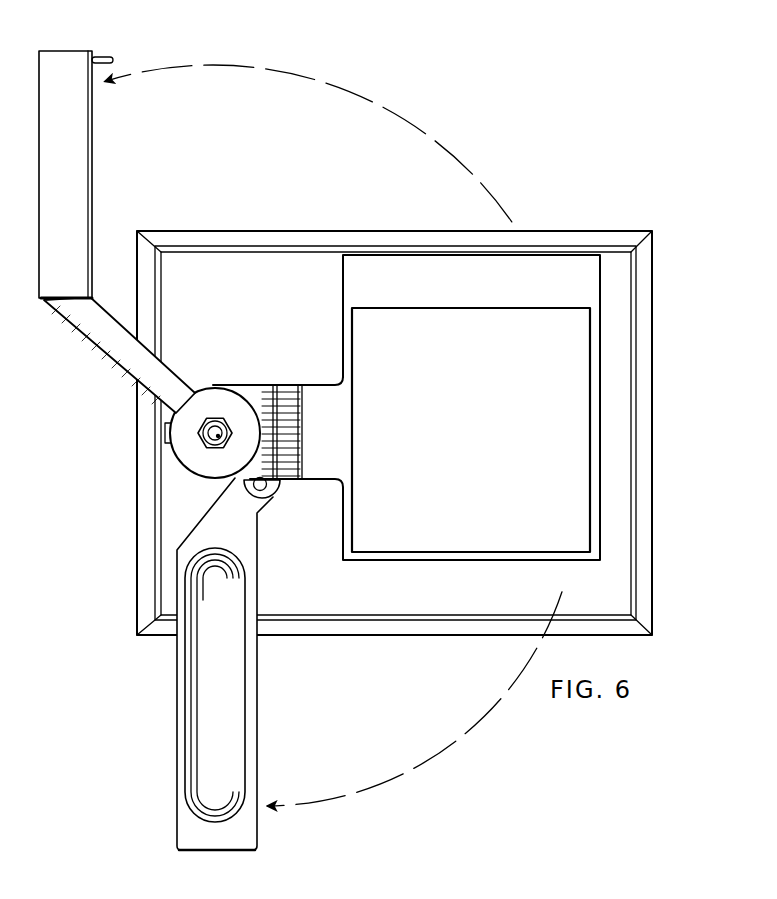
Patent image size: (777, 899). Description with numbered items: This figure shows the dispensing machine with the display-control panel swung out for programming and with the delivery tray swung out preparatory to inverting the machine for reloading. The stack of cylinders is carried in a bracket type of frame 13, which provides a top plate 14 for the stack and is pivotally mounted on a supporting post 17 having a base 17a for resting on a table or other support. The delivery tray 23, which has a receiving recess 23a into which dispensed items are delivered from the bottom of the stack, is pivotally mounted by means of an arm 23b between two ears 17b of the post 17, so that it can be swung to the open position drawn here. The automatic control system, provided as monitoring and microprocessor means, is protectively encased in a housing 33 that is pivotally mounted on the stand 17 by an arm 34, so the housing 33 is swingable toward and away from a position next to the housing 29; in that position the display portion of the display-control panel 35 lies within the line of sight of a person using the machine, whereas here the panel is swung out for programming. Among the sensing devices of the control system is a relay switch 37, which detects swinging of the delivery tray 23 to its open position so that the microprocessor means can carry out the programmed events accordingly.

The bracket frame 13 is at (300, 378).
The top plate 14 is at (573, 262).
The supporting post 17 is at (181, 448).
The base 17a is at (170, 495).
The ears 17b is at (280, 490).
The delivery tray 23 is at (214, 664).
The receiving recess 23a is at (196, 673).
The arm 23b is at (247, 538).
The housing 29 is at (587, 383).
The housing 33 is at (101, 174).
The arm 34 is at (112, 345).
The display-control panel 35 is at (92, 172).
The relay switch 37 is at (263, 450).